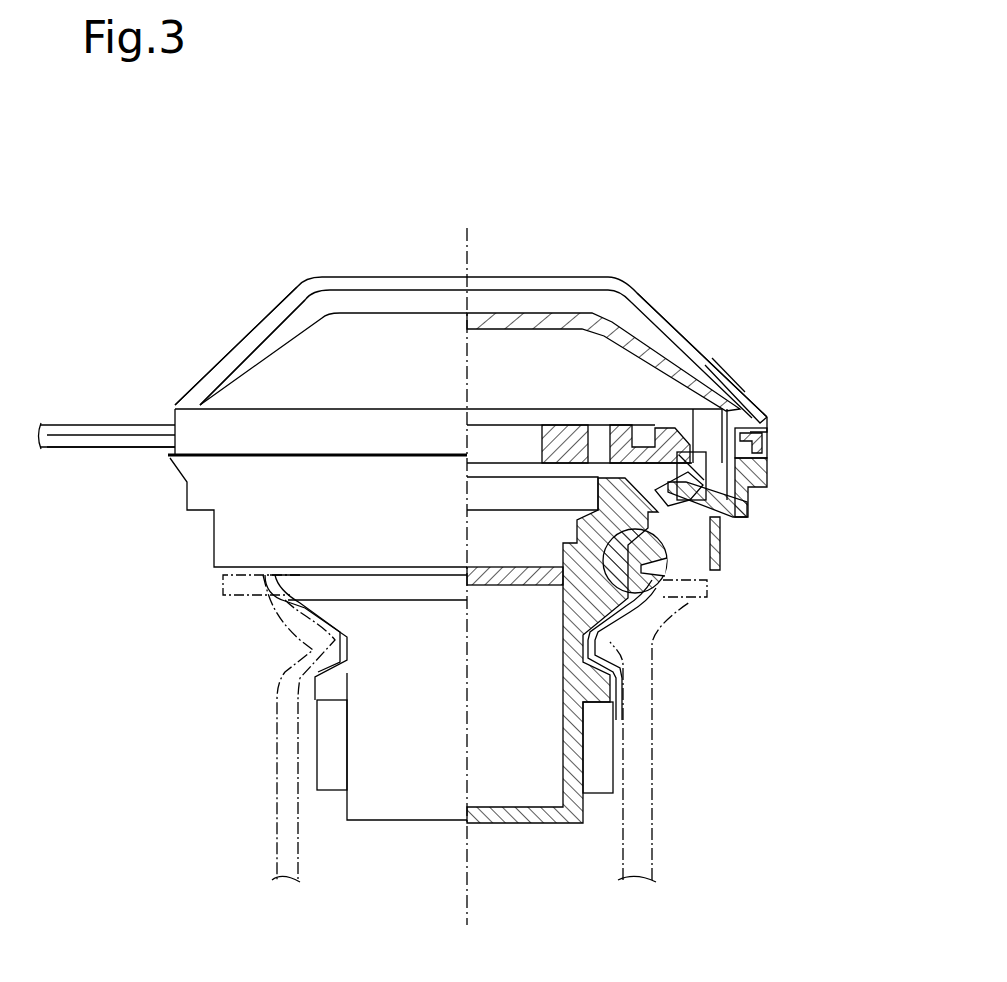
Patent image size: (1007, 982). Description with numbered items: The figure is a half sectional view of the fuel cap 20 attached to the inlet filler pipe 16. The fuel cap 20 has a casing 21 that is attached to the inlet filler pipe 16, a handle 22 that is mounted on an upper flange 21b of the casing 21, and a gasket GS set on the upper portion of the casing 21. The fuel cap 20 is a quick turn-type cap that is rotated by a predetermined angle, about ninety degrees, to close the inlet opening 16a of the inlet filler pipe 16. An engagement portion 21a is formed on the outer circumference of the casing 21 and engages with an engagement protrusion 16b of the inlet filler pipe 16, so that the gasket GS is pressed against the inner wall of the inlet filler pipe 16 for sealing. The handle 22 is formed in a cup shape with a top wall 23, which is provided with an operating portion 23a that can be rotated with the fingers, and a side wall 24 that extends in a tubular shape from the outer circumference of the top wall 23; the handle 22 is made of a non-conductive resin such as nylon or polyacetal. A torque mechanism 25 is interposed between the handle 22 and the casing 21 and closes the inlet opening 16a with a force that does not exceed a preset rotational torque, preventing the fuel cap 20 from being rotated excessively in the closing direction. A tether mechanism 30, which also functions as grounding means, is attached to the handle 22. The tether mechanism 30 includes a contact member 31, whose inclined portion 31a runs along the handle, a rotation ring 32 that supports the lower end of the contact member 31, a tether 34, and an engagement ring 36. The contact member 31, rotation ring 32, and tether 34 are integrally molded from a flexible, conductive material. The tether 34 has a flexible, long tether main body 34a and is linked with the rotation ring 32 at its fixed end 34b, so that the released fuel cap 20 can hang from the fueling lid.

The fuel cap 20 is at (704, 265).
The casing 21 is at (572, 800).
The engagement portion 21a is at (603, 708).
The upper flange 21b is at (693, 455).
The handle 22 is at (421, 308).
The top wall 23 is at (268, 404).
The operating portion 23a is at (352, 329).
The side wall 24 is at (742, 492).
The torque mechanism 25 is at (563, 442).
The tether mechanism 30 is at (848, 365).
The contact member 31 is at (737, 385).
The lip inclined portion 31a is at (533, 283).
The rotation ring 32 is at (762, 455).
The tether 34 is at (63, 449).
The tether main body 34a is at (93, 433).
The fixed end 34b is at (135, 440).
The engagement ring 36 is at (762, 470).
The inlet filler pipe 16 is at (643, 793).
The inlet opening 16a is at (640, 640).
The engagement protrusion 16b is at (655, 695).
The gasket GS is at (655, 593).